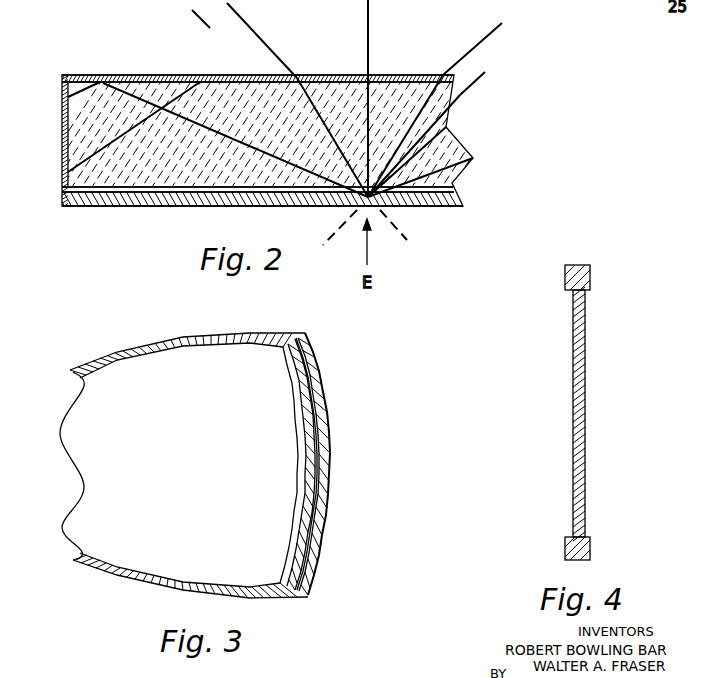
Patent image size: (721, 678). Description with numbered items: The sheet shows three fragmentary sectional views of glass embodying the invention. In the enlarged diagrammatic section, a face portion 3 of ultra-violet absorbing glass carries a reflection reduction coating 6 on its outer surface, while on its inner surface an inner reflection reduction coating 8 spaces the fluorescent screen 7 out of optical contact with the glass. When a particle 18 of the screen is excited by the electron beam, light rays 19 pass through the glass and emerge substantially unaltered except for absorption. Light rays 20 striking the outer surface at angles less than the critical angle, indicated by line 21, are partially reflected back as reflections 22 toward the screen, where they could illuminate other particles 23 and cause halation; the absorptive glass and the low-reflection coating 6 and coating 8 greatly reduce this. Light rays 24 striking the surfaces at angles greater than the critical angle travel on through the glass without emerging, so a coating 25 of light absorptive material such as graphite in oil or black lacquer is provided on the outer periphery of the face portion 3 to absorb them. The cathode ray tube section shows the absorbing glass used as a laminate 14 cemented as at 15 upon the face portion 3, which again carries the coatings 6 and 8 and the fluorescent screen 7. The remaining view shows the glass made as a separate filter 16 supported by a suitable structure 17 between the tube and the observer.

In FIG. 2, the face portion 3 is at (63, 127).
In FIG. 3, the face portion 3 is at (303, 470).
In FIG. 2, the reflection reduction coating 6 is at (133, 75).
In FIG. 3, the reflection reduction coating 6 is at (328, 493).
In FIG. 2, the fluorescent screen 7 is at (140, 208).
In FIG. 3, the fluorescent screen 7 is at (296, 500).
In FIG. 2, the coating 8 is at (115, 206).
In FIG. 3, the coating 8 is at (292, 522).
In FIG. 3, the laminate 14 is at (330, 418).
In FIG. 3, the cement 15 is at (328, 448).
In FIG. 4, the filter 16 is at (585, 395).
In FIG. 4, the supporting structure 17 is at (590, 278).
In FIG. 2, the particle 18 is at (393, 210).
In FIG. 2, the light rays 19 is at (371, 46).
In FIG. 2, the light rays 20 is at (317, 114).
In FIG. 2, the critical angle line 21 is at (213, 36).
In FIG. 2, the reflections 22 is at (252, 150).
In FIG. 2, the other particles 23 is at (213, 207).
In FIG. 2, the light rays 24 is at (159, 112).
In FIG. 2, the coating 25 is at (67, 153).